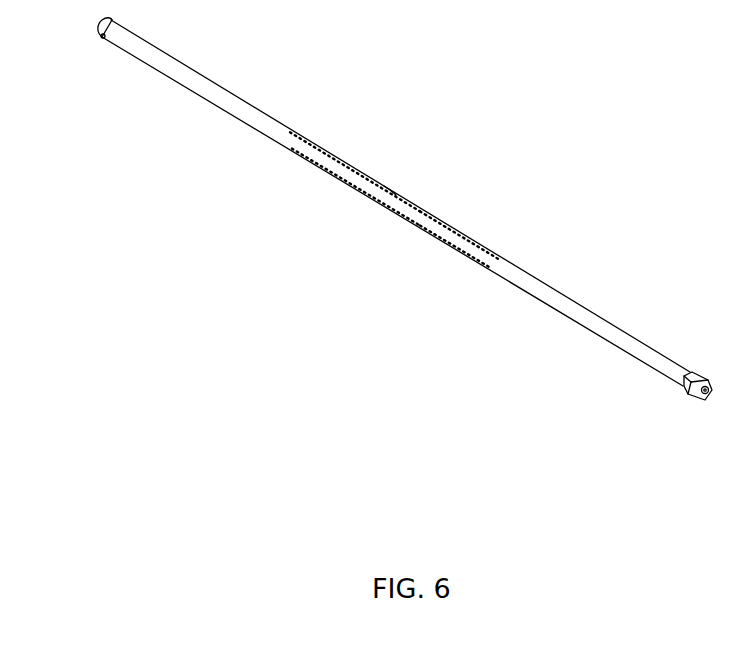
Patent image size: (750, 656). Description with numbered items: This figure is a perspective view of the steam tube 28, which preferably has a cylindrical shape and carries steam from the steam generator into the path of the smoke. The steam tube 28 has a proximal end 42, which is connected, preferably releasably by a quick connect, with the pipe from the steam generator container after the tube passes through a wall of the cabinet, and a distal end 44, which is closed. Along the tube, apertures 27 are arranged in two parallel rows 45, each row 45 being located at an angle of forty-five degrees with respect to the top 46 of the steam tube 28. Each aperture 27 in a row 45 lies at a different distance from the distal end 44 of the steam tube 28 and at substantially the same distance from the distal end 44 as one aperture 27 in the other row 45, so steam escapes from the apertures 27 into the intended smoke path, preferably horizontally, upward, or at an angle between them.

The steam tube 28 is at (252, 235).
The proximal end 42 is at (100, 37).
The distal end 44 is at (688, 399).
The rows 45 is at (313, 142).
The apertures 27 is at (438, 219).
The top 46 is at (388, 188).